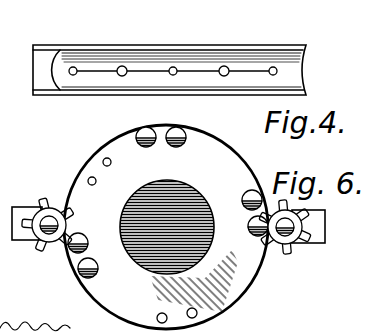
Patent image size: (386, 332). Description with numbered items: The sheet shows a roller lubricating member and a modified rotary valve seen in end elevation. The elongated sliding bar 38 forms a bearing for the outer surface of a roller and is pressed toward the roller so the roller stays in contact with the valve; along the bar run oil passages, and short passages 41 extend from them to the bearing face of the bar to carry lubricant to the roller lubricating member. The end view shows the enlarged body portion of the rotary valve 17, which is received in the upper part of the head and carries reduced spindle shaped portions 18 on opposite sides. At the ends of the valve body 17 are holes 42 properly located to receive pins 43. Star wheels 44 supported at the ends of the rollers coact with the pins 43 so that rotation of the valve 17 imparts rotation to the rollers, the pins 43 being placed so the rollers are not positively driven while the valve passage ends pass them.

In FIG. 4, the sliding bar 38 is at (226, 46).
In FIG. 4, the short passage 41 is at (74, 67).
In FIG. 6, the rotary valve 17 is at (166, 227).
In FIG. 6, the reduced spindle shaped portion 18 is at (192, 264).
In FIG. 6, the hole 42 is at (96, 178).
In FIG. 6, the pin 43 is at (88, 246).
In FIG. 6, the star wheel 44 is at (283, 252).